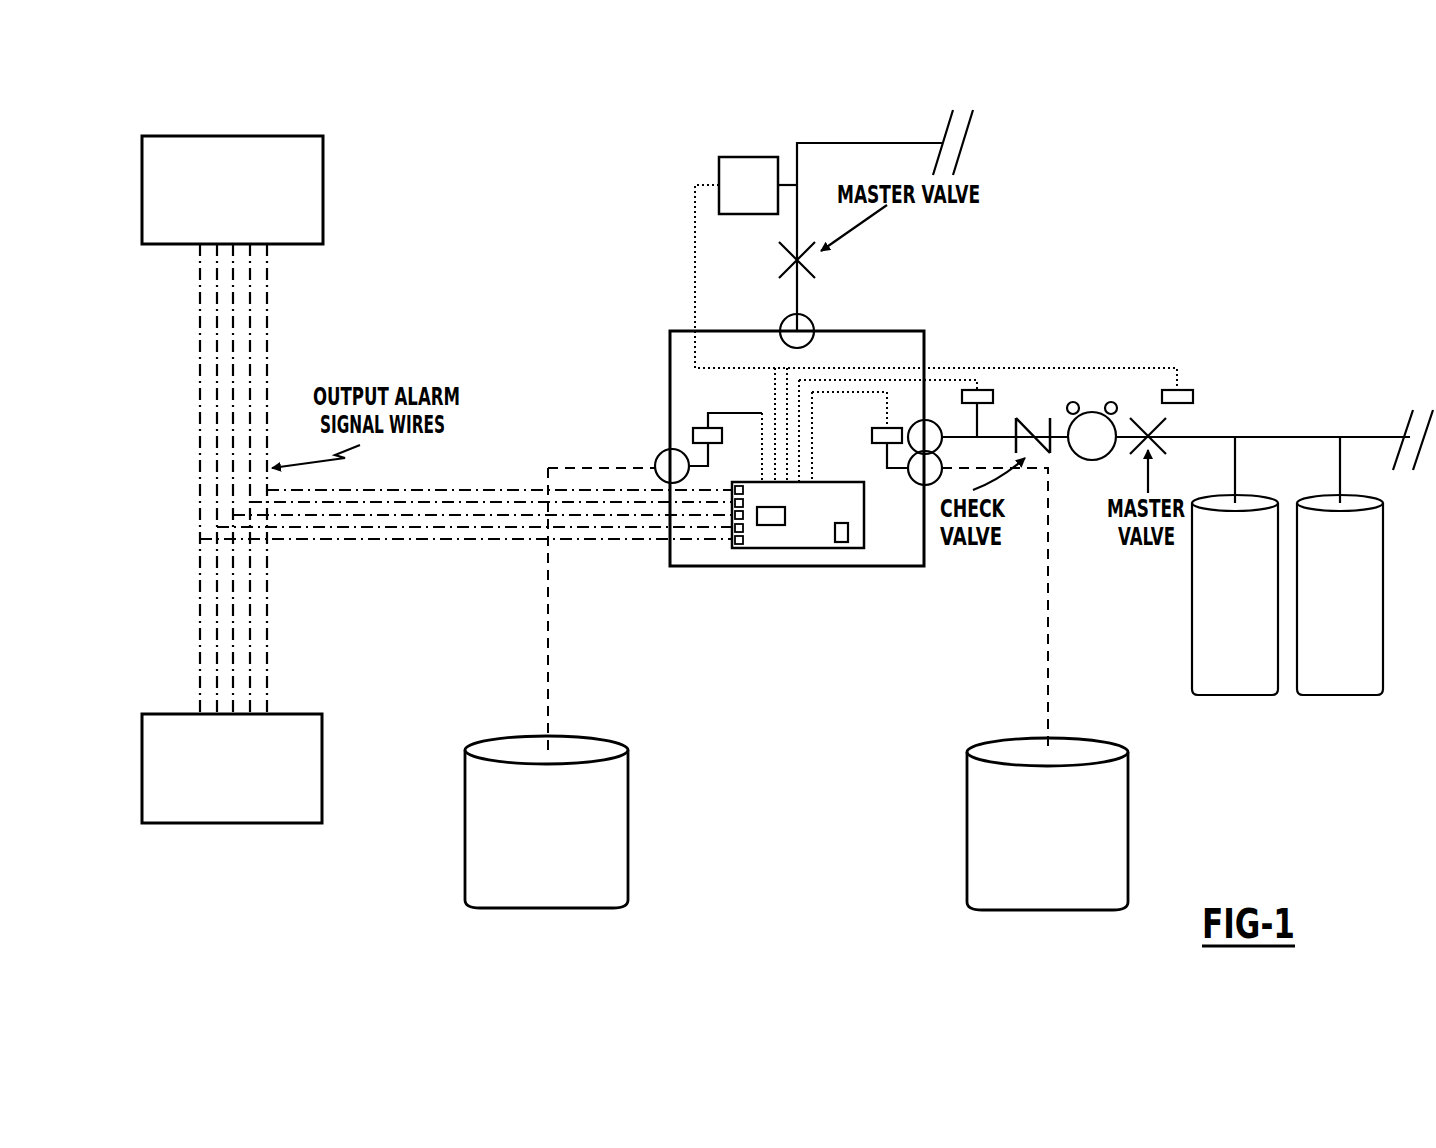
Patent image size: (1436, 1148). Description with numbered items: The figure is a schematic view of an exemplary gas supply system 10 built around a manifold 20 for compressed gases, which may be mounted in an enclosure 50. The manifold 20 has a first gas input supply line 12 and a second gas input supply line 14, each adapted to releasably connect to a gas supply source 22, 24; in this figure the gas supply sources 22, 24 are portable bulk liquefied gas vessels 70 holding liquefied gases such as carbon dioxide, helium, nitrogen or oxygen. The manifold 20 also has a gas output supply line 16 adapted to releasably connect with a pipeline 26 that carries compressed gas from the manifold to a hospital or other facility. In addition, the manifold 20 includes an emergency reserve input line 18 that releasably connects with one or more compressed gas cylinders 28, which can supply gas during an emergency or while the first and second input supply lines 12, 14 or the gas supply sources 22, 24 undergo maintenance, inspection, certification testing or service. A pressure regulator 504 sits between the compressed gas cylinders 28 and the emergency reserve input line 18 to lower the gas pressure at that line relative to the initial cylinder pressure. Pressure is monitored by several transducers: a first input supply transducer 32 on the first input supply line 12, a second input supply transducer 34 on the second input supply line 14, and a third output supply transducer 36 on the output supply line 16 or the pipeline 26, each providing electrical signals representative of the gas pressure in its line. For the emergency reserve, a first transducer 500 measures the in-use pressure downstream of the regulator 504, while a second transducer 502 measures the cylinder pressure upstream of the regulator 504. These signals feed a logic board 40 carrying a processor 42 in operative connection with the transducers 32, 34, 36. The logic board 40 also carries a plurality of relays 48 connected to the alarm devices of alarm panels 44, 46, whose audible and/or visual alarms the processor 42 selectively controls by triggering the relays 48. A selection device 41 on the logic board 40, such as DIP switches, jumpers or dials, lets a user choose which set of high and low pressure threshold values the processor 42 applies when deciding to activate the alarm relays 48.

The gas supply system 10 is at (1119, 240).
The first gas input supply line 12 is at (655, 470).
The second gas input supply line 14 is at (920, 485).
The gas output supply line 16 is at (811, 318).
The emergency reserve input line 18 is at (917, 424).
The manifold 20 is at (664, 368).
The gas supply source 22 is at (628, 828).
The gas supply source 24 is at (967, 828).
The pipeline 26 is at (878, 140).
The compressed gas cylinders 28 is at (1296, 489).
The first input supply transducer 32 is at (689, 432).
The second input supply transducer 34 is at (912, 535).
The third output supply transducer 36 is at (715, 160).
The logic board 40 is at (803, 553).
The selection device 41 is at (841, 523).
The processor 42 is at (770, 527).
The alarm panel 44 is at (328, 180).
The alarm panel 46 is at (284, 828).
The relays 48 is at (740, 480).
The enclosure 50 is at (640, 256).
The portable bulk liquefied gas vessels 70 is at (796, 823).
The first transducer 500 is at (993, 387).
The second transducer 502 is at (1200, 393).
The pressure regulator 504 is at (1090, 465).